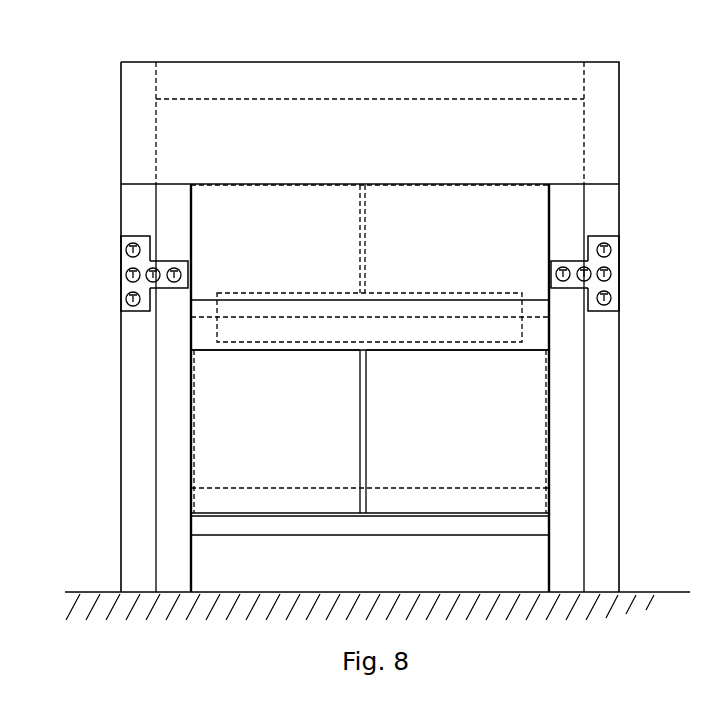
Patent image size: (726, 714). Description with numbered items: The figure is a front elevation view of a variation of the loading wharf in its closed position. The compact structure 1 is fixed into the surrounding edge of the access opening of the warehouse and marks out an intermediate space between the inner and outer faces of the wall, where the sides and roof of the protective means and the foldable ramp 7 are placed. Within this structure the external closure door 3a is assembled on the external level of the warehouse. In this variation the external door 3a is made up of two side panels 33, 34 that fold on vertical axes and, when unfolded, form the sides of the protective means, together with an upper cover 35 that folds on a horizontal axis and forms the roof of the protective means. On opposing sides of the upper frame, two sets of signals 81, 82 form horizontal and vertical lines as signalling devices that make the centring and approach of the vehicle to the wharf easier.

The compact structure 1 is at (284, 62).
The external closure door 3a is at (244, 457).
The foldable ramp 7 is at (352, 393).
The side panel 33 is at (493, 420).
The side panel 34 is at (225, 420).
The upper cover 35 is at (455, 248).
The set of signals 81 is at (168, 267).
The set of signals 82 is at (124, 258).